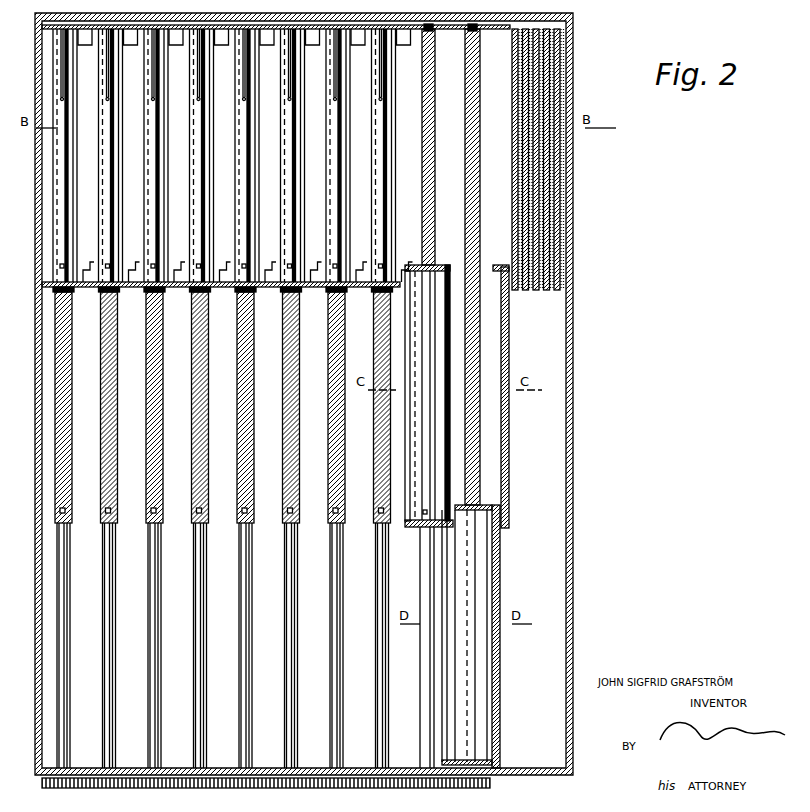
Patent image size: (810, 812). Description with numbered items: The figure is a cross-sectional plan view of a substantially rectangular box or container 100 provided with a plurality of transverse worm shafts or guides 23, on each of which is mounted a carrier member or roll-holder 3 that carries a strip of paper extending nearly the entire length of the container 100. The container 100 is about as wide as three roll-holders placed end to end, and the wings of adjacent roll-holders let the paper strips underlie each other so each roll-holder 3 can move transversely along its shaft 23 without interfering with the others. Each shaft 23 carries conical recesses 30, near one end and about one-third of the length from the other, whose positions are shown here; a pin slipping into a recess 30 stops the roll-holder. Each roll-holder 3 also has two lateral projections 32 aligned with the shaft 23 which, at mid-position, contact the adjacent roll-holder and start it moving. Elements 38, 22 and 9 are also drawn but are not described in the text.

The container 100 is at (573, 266).
The lateral projection 32 is at (360, 27).
The connector 38 is at (478, 24).
The tube element 22 is at (378, 148).
The shaft 23 is at (432, 202).
The recess 30 is at (108, 516).
The roll-holder 3 is at (403, 287).
The wall 9 is at (511, 355).